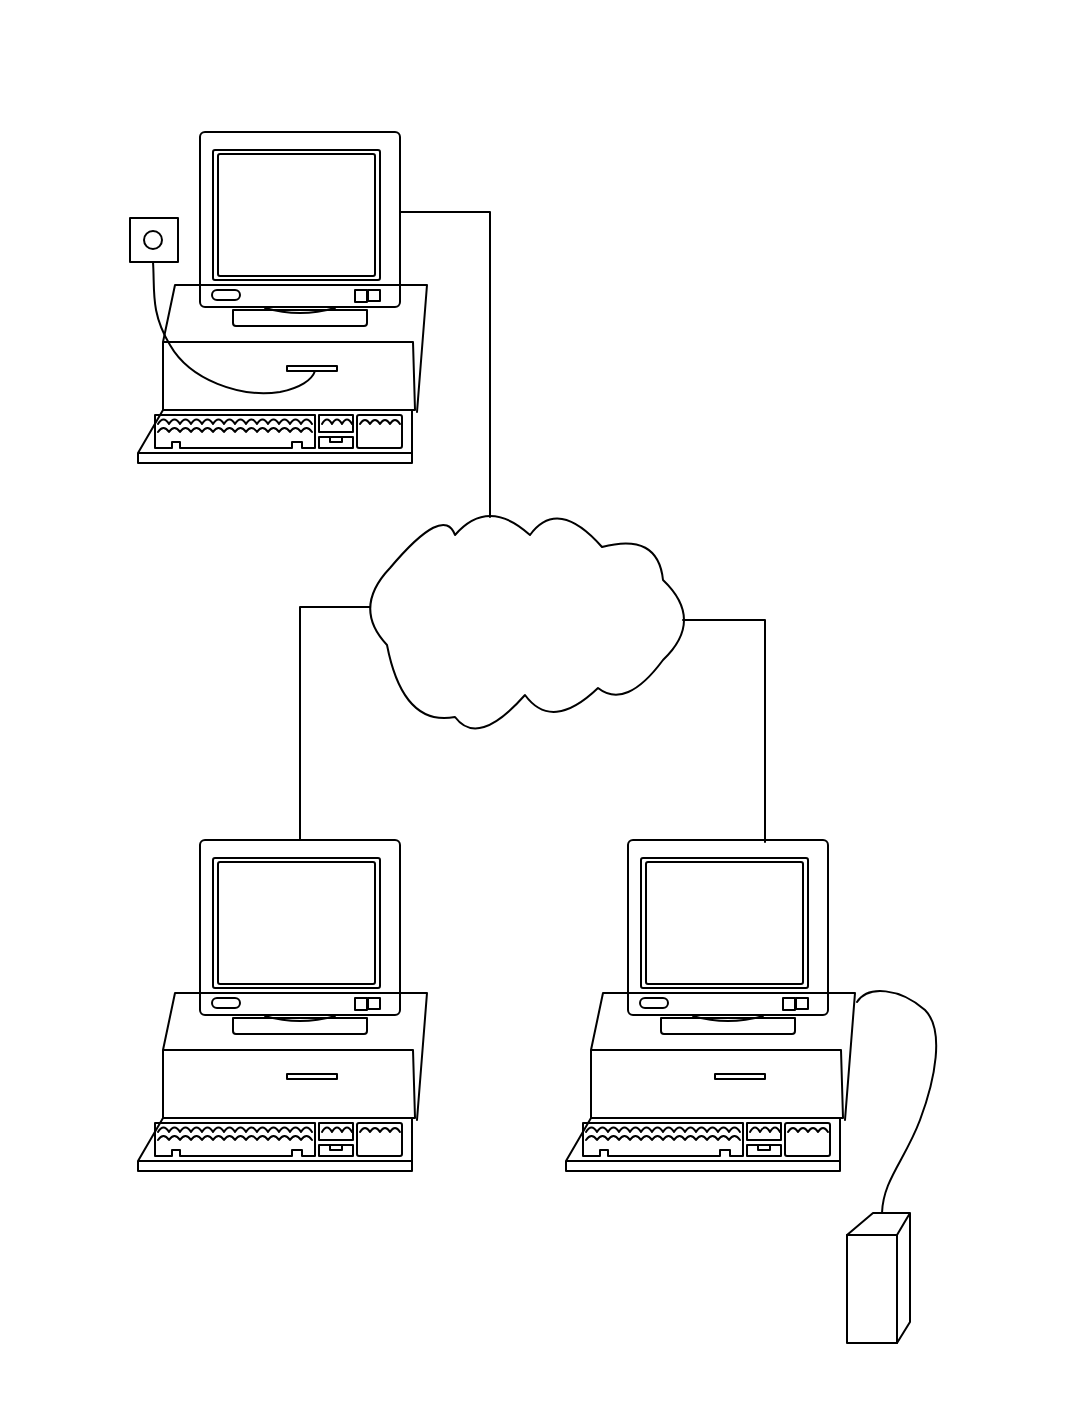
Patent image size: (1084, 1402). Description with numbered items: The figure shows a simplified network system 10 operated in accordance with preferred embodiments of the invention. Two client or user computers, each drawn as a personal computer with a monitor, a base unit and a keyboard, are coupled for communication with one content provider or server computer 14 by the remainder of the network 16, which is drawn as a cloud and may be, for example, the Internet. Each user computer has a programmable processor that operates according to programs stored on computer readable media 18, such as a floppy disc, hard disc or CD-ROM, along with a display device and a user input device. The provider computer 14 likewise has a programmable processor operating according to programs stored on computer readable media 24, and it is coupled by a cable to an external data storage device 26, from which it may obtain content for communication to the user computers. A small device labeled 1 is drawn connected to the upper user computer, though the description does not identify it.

The biometric input device 1 is at (152, 218).
The network system 10 is at (672, 258).
The content provider computer 14 is at (747, 1021).
The network 16 is at (622, 540).
The computer readable media 18 is at (328, 1056).
The computer readable media 24 is at (847, 1060).
The external data storage device 26 is at (873, 1277).